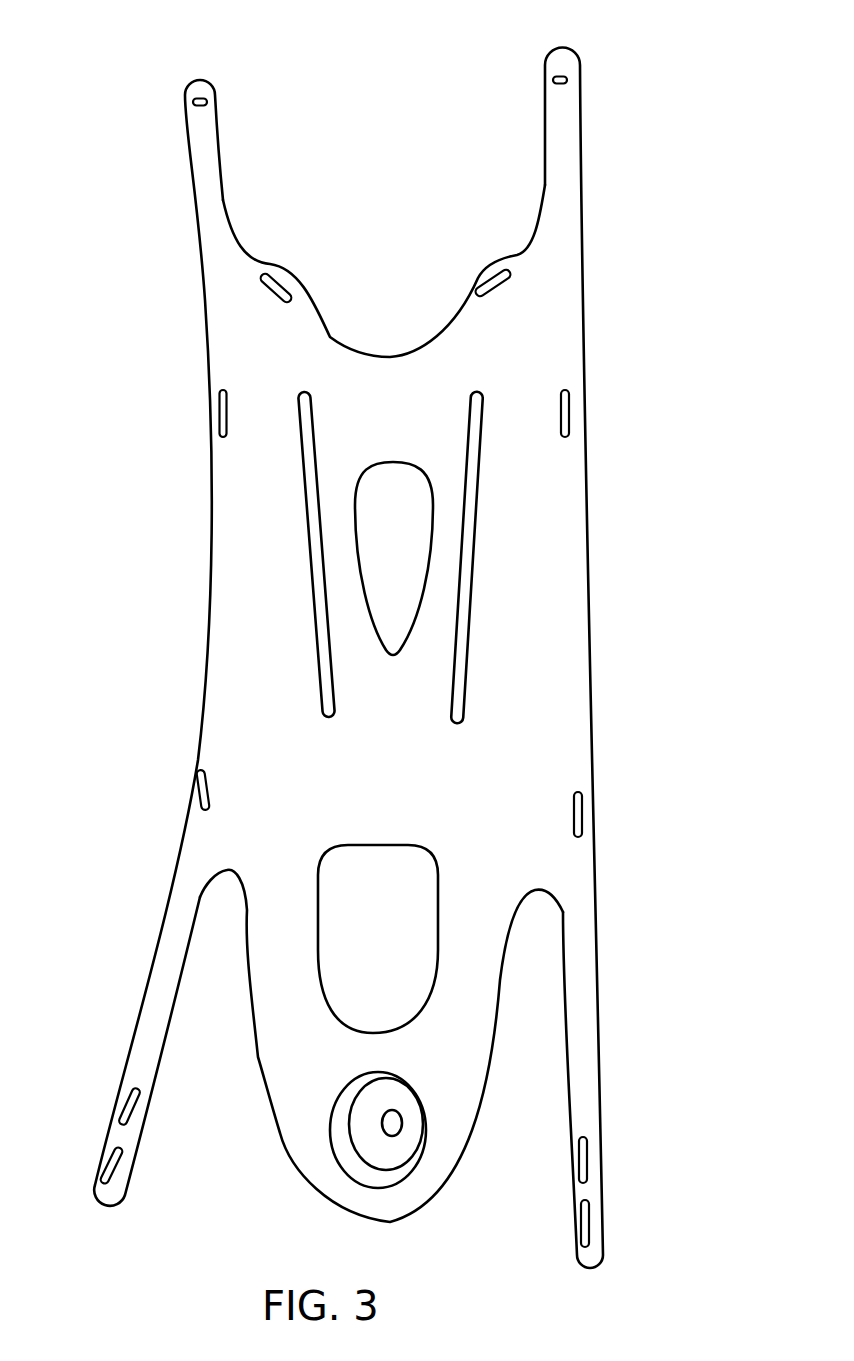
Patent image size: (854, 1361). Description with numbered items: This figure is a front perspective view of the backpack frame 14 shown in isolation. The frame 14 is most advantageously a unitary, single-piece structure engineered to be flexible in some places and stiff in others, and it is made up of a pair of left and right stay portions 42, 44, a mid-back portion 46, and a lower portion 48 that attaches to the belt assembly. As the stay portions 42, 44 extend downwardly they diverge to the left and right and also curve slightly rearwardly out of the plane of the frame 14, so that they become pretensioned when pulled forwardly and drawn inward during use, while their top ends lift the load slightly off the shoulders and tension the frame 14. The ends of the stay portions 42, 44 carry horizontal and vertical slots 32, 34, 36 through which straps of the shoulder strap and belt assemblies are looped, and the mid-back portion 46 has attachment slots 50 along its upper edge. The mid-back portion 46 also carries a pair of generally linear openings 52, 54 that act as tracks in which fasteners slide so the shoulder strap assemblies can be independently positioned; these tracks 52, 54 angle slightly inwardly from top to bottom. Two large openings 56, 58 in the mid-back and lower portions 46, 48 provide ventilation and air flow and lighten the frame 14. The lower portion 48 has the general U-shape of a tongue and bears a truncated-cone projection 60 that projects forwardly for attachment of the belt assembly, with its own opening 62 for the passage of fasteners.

The frame 14 is at (521, 752).
The slots 32 is at (200, 97).
The slots 34 is at (222, 412).
The slots 36 is at (200, 782).
The left stay portion 42 is at (224, 575).
The right stay portion 44 is at (572, 492).
The mid-back portion 46 is at (258, 475).
The lower portion 48 is at (285, 998).
The attachment slots 50 is at (272, 287).
The track opening 52 is at (323, 690).
The track opening 54 is at (465, 610).
The large opening 56 is at (390, 645).
The large opening 58 is at (378, 857).
The projection 60 is at (375, 1147).
The opening 62 is at (395, 1125).